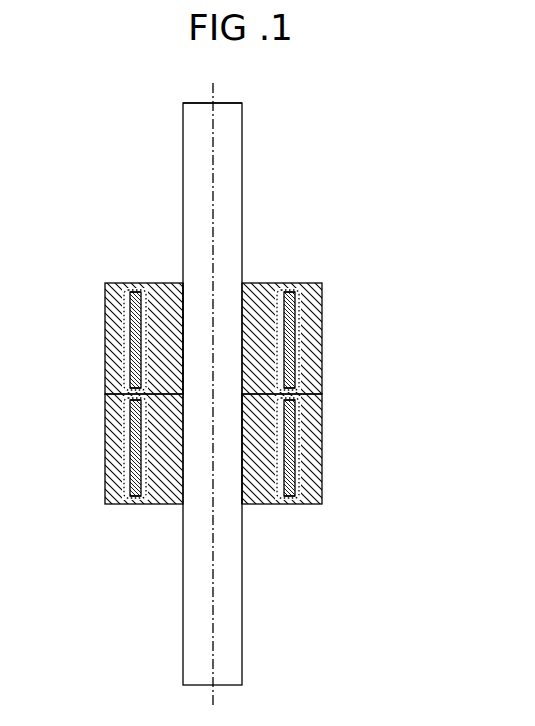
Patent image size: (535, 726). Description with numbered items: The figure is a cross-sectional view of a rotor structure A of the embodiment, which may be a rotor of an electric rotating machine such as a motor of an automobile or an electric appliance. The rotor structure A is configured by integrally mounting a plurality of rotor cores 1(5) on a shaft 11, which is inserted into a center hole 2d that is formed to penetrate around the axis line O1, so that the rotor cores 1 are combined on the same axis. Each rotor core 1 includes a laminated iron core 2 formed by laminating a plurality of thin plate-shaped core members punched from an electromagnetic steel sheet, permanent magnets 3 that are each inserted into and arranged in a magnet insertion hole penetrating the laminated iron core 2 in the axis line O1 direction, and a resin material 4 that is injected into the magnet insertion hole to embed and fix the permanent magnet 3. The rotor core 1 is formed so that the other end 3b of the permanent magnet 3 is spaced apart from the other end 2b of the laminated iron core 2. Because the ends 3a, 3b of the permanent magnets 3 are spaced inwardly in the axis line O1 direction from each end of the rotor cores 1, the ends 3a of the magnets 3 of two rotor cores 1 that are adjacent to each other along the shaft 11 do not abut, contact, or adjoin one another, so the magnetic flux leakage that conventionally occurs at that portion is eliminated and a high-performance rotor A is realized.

The rotor core 1 is at (273, 397).
The rotor core 5 is at (273, 397).
The laminated iron core 2 is at (322, 362).
The other end of the laminated iron core 2b is at (229, 310).
The center hole 2d is at (199, 486).
The permanent magnet 3 is at (134, 338).
The end of the permanent magnet 3a is at (131, 392).
The other end of the permanent magnet 3b is at (137, 290).
The resin material 4 is at (127, 286).
The shaft 11 is at (242, 165).
The axis line O1 is at (211, 381).
The rotor structure A is at (405, 203).